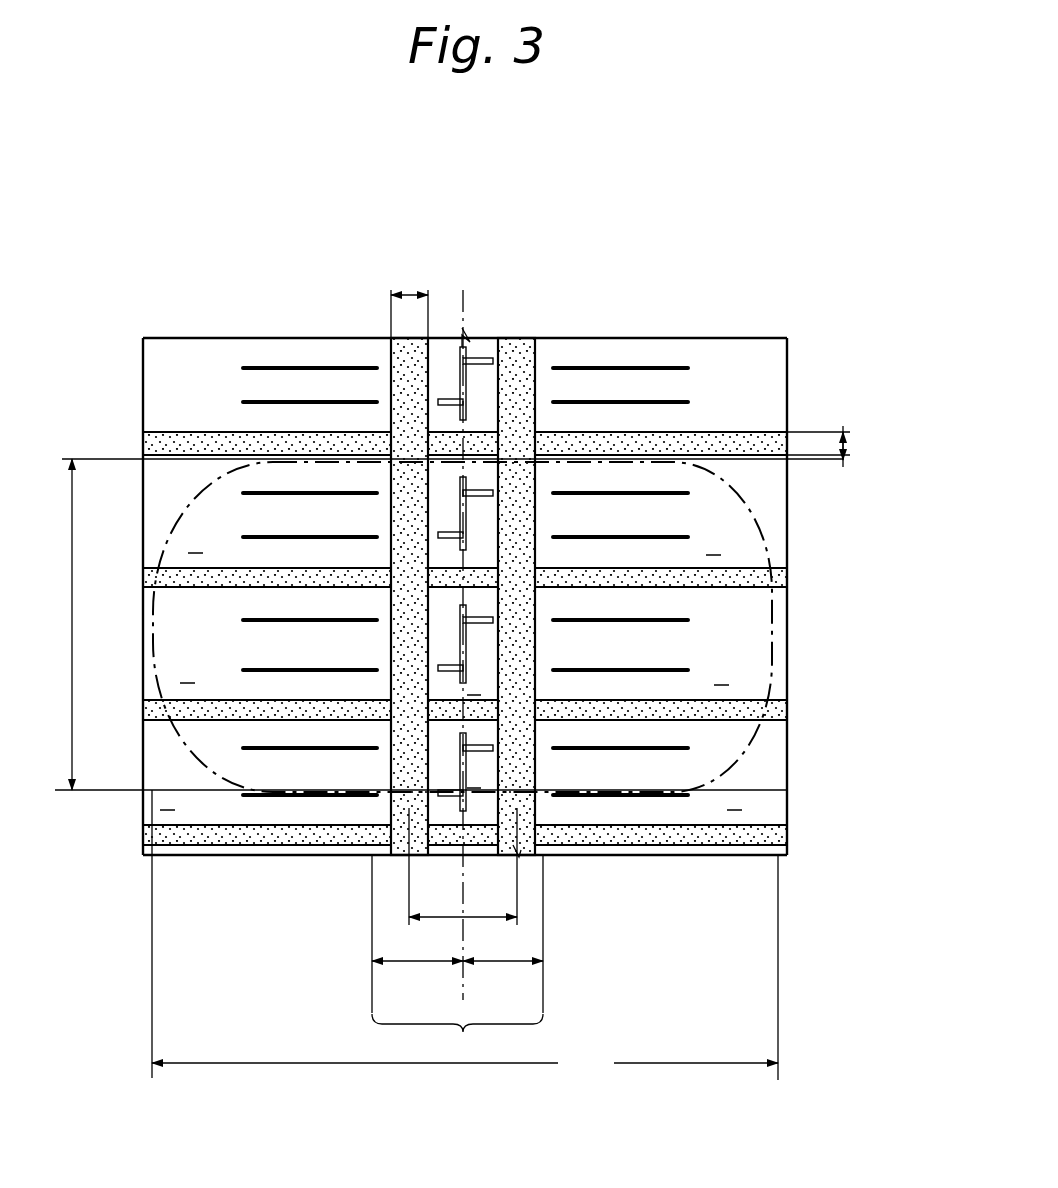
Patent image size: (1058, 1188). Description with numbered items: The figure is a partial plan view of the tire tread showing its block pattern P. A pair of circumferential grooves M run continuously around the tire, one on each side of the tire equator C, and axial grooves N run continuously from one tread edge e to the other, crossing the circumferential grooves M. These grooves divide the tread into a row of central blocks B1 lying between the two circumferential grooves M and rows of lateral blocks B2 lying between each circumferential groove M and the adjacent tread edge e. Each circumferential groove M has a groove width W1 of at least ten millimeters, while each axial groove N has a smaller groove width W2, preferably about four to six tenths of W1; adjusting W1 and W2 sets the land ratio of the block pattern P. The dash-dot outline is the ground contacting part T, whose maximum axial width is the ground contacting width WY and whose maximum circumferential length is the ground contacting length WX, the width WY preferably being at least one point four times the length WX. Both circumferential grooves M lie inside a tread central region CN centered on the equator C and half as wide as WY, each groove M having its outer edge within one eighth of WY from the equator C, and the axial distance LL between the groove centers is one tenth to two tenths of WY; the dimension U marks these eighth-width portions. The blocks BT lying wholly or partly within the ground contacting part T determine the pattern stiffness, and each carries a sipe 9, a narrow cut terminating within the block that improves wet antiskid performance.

The sipe 9 is at (308, 358).
The central block B1 is at (448, 352).
The lateral block B2 is at (178, 357).
The circumferential groove M is at (412, 398).
The tire equator C is at (463, 308).
The block pattern P is at (816, 314).
The tread edge e is at (143, 400).
The ground contacting part T is at (797, 478).
The block in the ground contacting part BT is at (457, 669).
The axial groove N is at (290, 838).
The groove width of circumferential groove W1 is at (420, 294).
The groove width of axial groove W2 is at (845, 447).
The ground contacting length WX is at (68, 624).
The ground contacting width WY is at (465, 935).
The axial distance between circumferential grooves LL is at (487, 912).
The unit width WY/8 U is at (402, 962).
The tread central region CN is at (457, 1036).